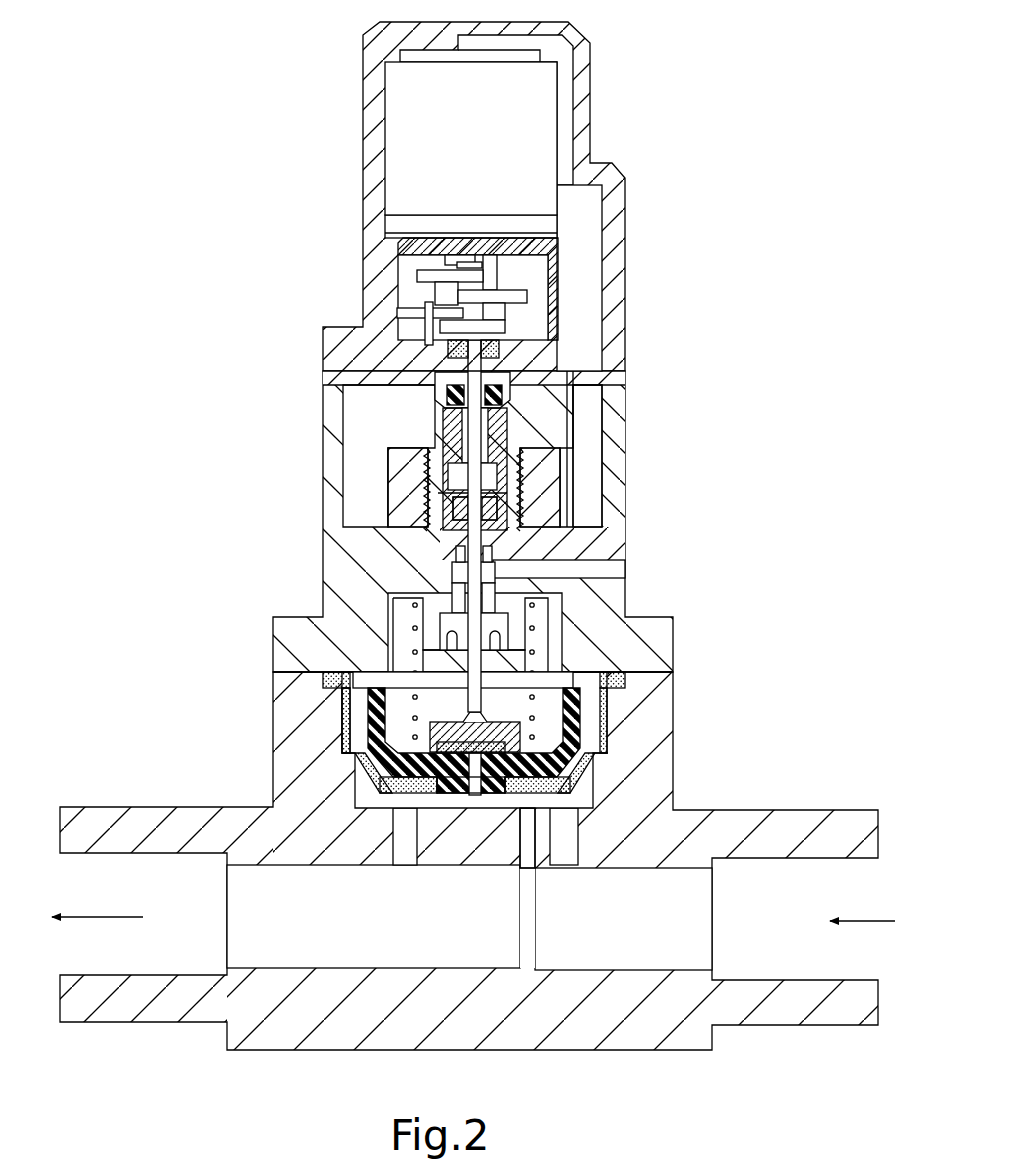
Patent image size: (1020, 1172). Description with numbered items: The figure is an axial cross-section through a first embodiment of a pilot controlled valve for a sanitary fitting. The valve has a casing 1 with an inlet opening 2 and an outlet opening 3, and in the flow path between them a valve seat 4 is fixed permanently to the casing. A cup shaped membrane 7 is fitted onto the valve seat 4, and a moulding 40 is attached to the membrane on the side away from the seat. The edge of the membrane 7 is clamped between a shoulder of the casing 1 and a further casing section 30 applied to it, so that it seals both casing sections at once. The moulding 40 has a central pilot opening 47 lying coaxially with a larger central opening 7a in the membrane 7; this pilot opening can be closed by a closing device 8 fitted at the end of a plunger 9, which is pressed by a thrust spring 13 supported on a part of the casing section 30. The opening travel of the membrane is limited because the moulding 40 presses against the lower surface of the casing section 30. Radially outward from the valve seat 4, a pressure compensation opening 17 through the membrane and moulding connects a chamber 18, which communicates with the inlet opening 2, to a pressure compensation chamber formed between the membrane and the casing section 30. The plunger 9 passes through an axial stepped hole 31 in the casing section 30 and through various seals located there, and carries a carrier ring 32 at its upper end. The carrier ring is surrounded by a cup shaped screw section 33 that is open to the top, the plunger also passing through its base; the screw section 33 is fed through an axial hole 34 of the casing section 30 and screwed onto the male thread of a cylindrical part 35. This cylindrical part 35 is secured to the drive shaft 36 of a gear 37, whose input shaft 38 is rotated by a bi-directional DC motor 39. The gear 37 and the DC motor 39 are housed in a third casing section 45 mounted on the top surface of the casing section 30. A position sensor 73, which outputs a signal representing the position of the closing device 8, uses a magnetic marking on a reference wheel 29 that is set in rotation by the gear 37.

The casing 1 is at (357, 1031).
The inlet opening 2 is at (812, 975).
The outlet opening 3 is at (135, 975).
The valve seat 4 is at (520, 796).
The cup shaped membrane 7 is at (560, 794).
The central opening 7a is at (447, 795).
The closing device 8 is at (509, 722).
The plunger 9 is at (600, 526).
The thrust spring 13 is at (479, 668).
The pressure compensation opening 17 is at (393, 780).
The chamber 18 is at (588, 785).
The reference wheel 29 is at (407, 312).
The casing section 30 is at (326, 488).
The axial stepped hole 31 is at (452, 572).
The carrier ring 32 is at (575, 498).
The screw section 33 is at (400, 505).
The axial hole 34 is at (546, 470).
The cylindrical part 35 is at (496, 437).
The drive shaft 36 is at (470, 357).
The gear 37 is at (532, 286).
The input shaft 38 is at (472, 262).
The DC motor 39 is at (490, 153).
The moulding 40 is at (575, 724).
The third casing section 45 is at (370, 148).
The pilot opening 47 is at (470, 795).
The position sensor 73 is at (392, 311).